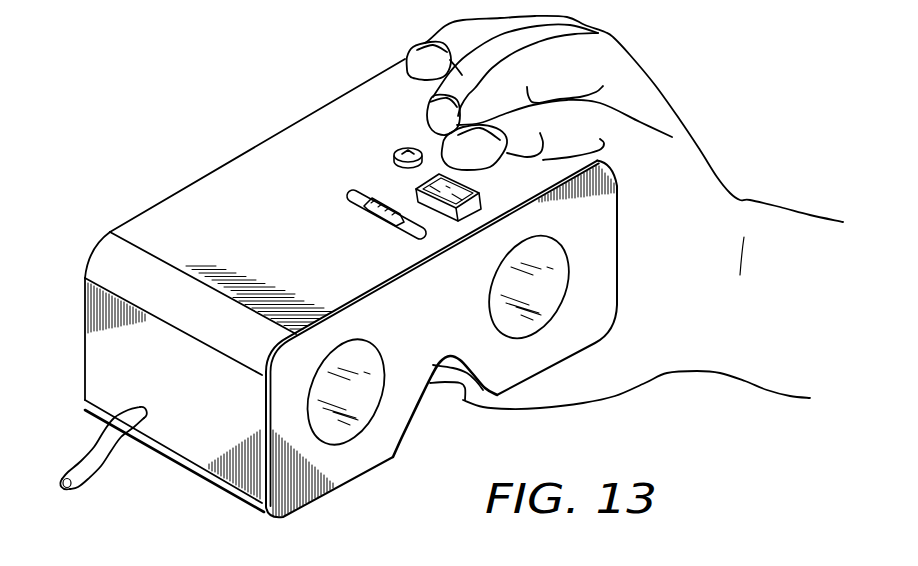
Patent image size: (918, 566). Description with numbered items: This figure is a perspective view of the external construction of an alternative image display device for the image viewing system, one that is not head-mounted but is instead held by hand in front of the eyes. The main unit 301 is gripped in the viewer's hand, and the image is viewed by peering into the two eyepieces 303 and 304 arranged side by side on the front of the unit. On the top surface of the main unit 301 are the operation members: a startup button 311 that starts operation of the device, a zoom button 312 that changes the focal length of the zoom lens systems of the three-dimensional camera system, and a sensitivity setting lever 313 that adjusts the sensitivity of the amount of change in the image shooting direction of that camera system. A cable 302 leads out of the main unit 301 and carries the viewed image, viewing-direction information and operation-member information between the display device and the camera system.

The main unit 301 is at (193, 193).
The cable 302 is at (100, 467).
The eyepiece 303 is at (548, 289).
The eyepiece 304 is at (367, 395).
The startup button 311 is at (405, 150).
The zoom button 312 is at (418, 186).
The sensitivity setting lever 313 is at (363, 217).